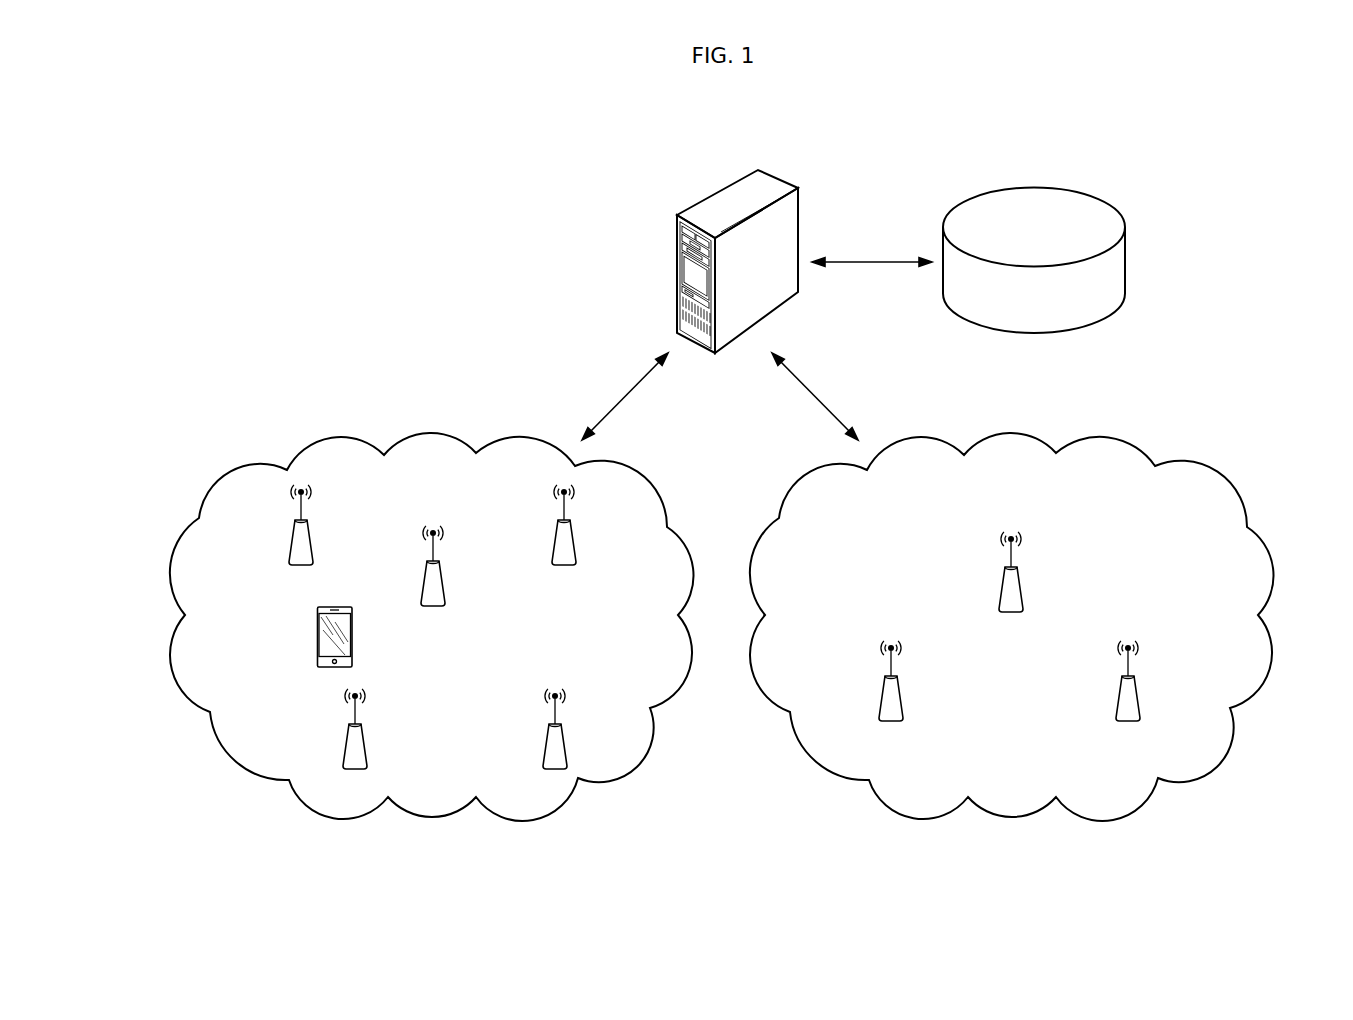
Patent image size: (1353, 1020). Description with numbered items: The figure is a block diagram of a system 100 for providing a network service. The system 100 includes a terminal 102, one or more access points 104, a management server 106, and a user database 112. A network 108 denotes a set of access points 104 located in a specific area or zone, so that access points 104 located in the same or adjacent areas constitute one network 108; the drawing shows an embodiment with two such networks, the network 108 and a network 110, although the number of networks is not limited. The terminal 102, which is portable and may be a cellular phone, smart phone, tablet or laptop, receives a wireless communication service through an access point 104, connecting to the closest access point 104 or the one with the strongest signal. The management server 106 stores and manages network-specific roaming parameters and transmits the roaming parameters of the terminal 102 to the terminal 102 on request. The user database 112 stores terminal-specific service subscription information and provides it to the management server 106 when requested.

The system for providing a network service 100 is at (218, 112).
The terminal 102 is at (352, 637).
The access point 104 is at (565, 749).
The management server 106 is at (771, 183).
The network 108 is at (431, 432).
The network 110 is at (1010, 432).
The user database 112 is at (1027, 198).